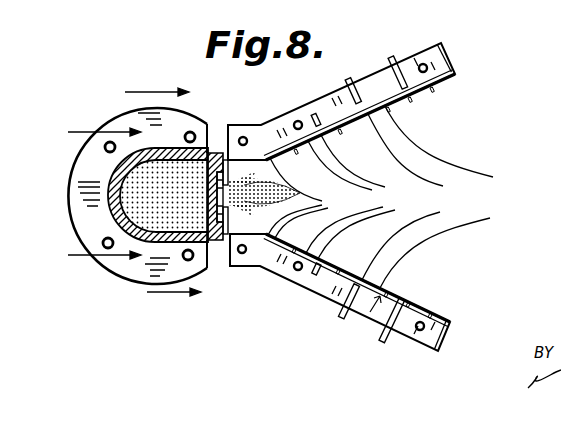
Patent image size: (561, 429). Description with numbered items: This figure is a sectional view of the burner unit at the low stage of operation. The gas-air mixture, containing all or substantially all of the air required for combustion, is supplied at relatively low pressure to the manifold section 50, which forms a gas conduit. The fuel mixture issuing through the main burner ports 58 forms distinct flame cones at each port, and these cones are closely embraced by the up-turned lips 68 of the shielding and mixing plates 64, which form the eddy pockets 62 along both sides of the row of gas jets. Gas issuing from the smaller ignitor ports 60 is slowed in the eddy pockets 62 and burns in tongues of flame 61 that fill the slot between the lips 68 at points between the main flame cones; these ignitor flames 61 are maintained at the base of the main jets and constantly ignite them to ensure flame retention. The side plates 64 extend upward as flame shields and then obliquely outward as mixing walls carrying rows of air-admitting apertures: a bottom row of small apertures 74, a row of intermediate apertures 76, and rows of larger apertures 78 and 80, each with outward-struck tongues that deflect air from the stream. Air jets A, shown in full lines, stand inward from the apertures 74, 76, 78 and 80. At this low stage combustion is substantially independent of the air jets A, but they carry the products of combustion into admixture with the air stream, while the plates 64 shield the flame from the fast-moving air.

The manifold section 50 is at (107, 218).
The main burner ports 58 is at (200, 208).
The ignitor ports 60 is at (213, 152).
The tongues of flame 61 is at (245, 164).
The eddy pockets 62 is at (225, 158).
The shielding and mixing plate 64 is at (384, 298).
The up-turned lip 68 is at (229, 266).
The small apertures 74 is at (263, 268).
The intermediate sized apertures 76 is at (308, 116).
The larger apertures 78 is at (347, 283).
The larger apertures 80 is at (388, 82).
The air jets A is at (281, 218).